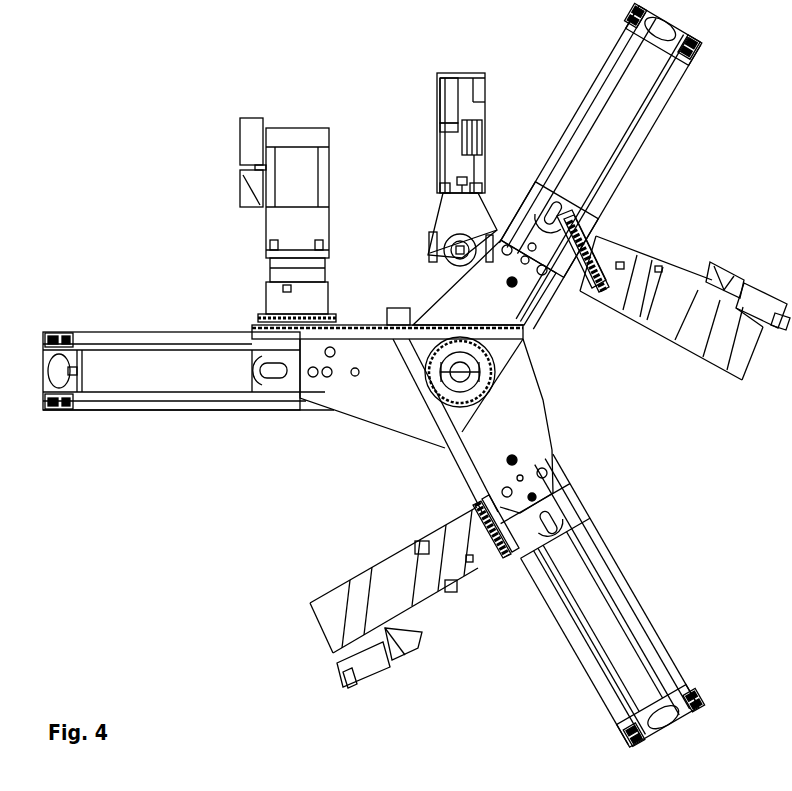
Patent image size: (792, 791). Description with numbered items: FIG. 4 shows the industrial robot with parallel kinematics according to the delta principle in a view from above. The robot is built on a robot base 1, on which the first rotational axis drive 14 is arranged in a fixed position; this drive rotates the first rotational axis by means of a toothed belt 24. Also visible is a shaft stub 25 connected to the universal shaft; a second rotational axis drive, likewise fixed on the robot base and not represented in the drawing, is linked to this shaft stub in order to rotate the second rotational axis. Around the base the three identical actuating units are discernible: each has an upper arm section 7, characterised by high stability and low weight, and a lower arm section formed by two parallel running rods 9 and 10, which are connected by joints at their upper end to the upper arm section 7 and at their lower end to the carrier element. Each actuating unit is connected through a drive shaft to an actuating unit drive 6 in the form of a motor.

The robot base 1 is at (521, 432).
The actuating unit drive 6 is at (370, 577).
The upper arm section 7 is at (607, 620).
The rod 9 is at (577, 637).
The rod 10 is at (593, 538).
The first rotational axis drive 14 is at (448, 246).
The toothed belt 24 is at (437, 272).
The shaft stub 25 is at (462, 372).